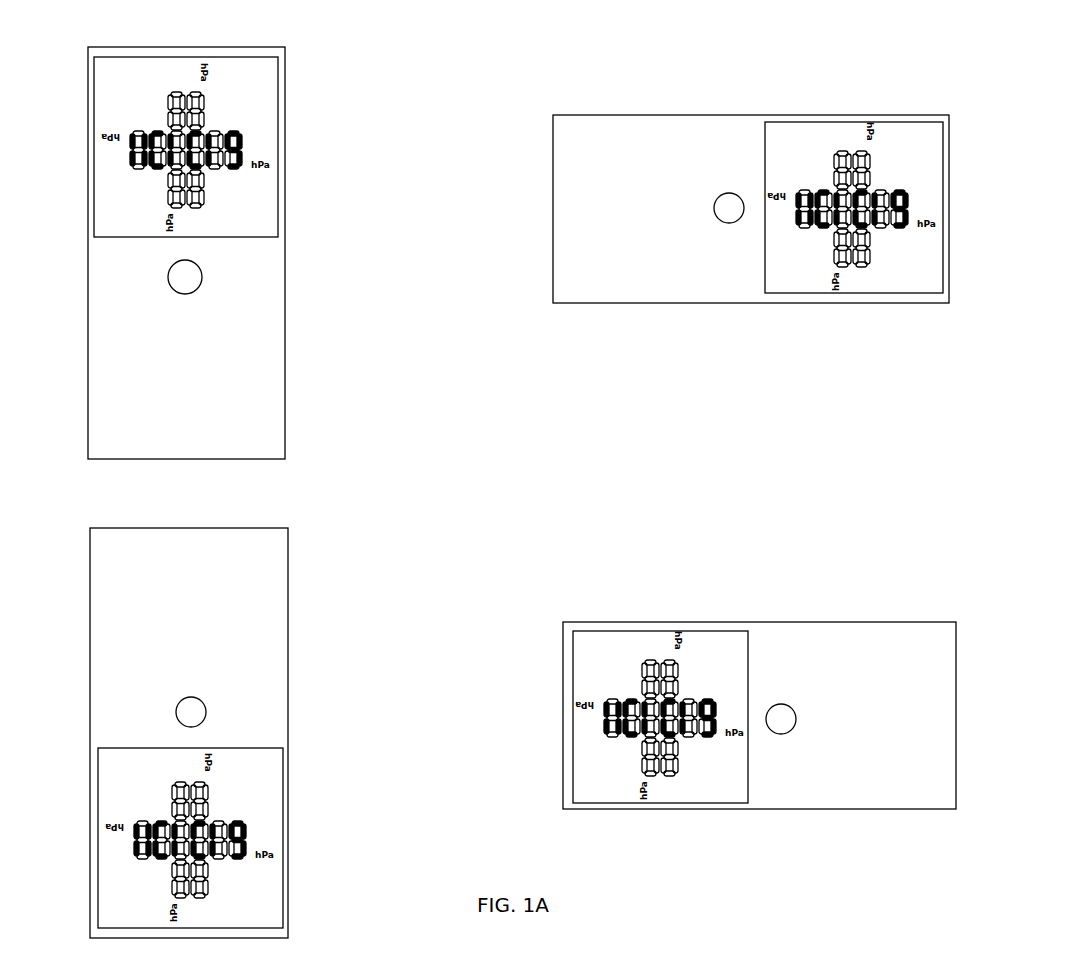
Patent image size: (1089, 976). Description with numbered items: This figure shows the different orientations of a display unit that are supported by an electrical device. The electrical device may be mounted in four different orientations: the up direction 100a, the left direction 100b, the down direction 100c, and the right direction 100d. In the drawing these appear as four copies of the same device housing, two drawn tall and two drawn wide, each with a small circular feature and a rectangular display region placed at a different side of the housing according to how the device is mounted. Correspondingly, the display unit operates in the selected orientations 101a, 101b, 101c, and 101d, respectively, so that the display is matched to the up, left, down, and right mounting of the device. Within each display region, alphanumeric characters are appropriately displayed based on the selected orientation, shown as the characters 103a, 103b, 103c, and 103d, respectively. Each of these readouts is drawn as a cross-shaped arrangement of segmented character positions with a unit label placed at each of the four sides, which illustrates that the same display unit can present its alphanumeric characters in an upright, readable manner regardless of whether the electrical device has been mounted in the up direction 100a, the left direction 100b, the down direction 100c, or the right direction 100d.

The up direction 100a is at (291, 155).
The left direction 100b is at (954, 156).
The down direction 100c is at (295, 605).
The right direction 100d is at (796, 617).
The selected orientation 101a is at (256, 233).
The selected orientation 101b is at (929, 290).
The selected orientation 101c is at (169, 776).
The selected orientation 101d is at (731, 793).
The alphanumeric characters 103a is at (158, 122).
The alphanumeric characters 103b is at (830, 187).
The alphanumeric characters 103c is at (216, 816).
The alphanumeric characters 103d is at (632, 694).